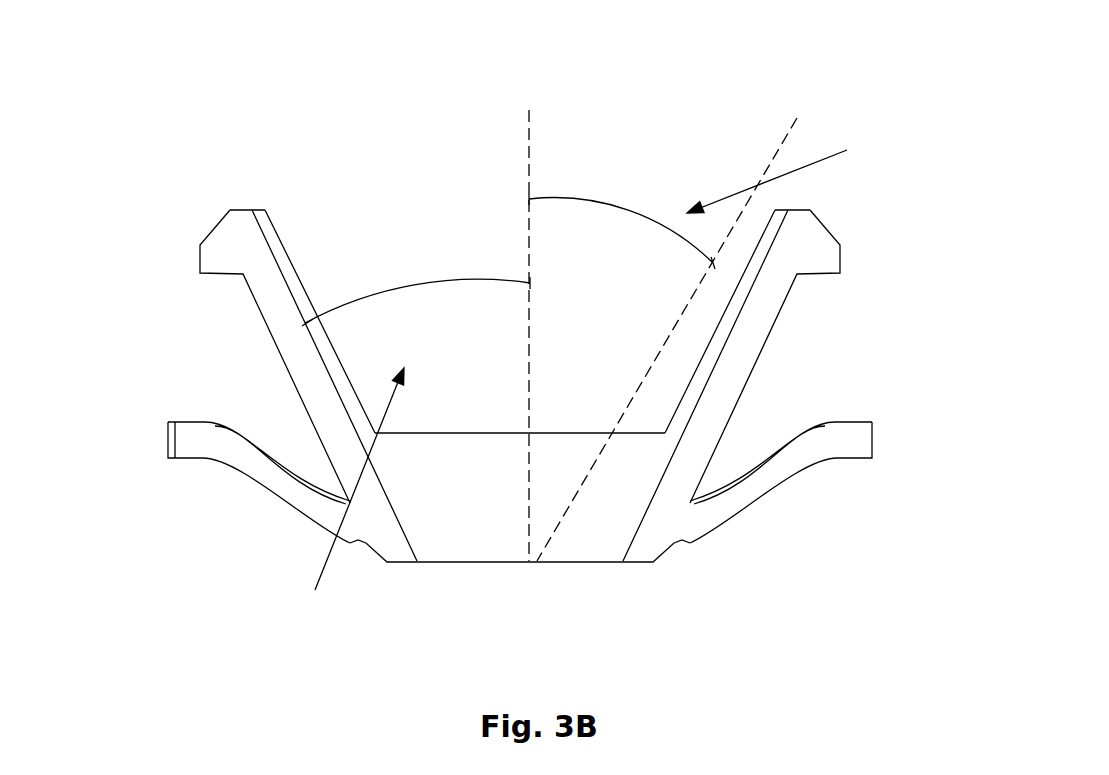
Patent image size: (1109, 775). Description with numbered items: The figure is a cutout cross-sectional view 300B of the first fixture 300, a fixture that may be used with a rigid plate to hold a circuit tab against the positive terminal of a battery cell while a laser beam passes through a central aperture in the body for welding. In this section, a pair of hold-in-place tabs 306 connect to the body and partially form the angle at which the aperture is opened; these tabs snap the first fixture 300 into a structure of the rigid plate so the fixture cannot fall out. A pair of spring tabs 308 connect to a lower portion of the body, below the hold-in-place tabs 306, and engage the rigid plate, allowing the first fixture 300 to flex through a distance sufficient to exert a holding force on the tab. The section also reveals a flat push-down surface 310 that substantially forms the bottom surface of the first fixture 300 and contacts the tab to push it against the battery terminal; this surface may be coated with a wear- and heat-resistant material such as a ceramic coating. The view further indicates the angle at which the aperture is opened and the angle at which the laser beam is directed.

The first fixture 300 is at (481, 101).
The cutout cross-sectional view 300B is at (728, 90).
The hold-in-place tabs 306 is at (237, 209).
The spring tabs 308 is at (185, 460).
The flat push-down surface 310 is at (640, 562).